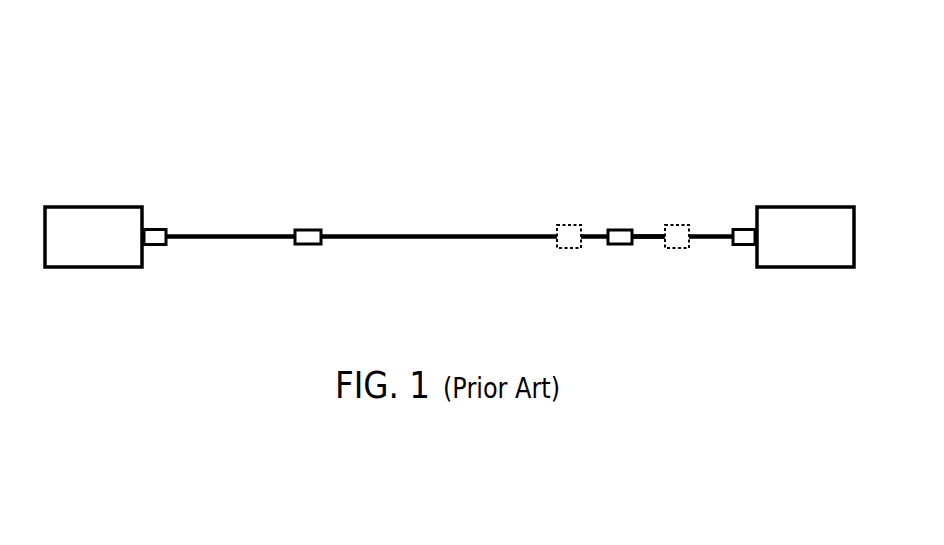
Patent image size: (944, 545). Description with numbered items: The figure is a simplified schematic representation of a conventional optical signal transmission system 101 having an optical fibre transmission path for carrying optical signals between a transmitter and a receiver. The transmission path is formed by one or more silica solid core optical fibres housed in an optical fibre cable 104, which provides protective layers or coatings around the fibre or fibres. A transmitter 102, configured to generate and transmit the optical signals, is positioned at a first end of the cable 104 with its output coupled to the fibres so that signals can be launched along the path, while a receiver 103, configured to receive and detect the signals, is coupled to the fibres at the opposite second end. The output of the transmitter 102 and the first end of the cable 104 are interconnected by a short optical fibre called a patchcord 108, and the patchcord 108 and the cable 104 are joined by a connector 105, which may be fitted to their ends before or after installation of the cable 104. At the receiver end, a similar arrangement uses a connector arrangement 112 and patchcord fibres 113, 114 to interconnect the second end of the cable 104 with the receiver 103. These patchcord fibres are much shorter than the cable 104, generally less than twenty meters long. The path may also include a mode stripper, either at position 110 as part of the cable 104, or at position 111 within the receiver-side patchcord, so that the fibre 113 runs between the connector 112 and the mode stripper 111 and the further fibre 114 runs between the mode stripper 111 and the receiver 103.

The optical signal transmission system 101 is at (237, 118).
The transmitter 102 is at (85, 205).
The receiver 103 is at (807, 205).
The optical fibre cable 104 is at (350, 233).
The connector 105 is at (307, 247).
The patchcord 108 is at (207, 233).
The mode stripper position 110 is at (568, 250).
The mode stripper position 111 is at (677, 250).
The connector arrangement 112 is at (620, 229).
The patchcord fibre 113 is at (647, 242).
The patchcord fibre 114 is at (713, 233).